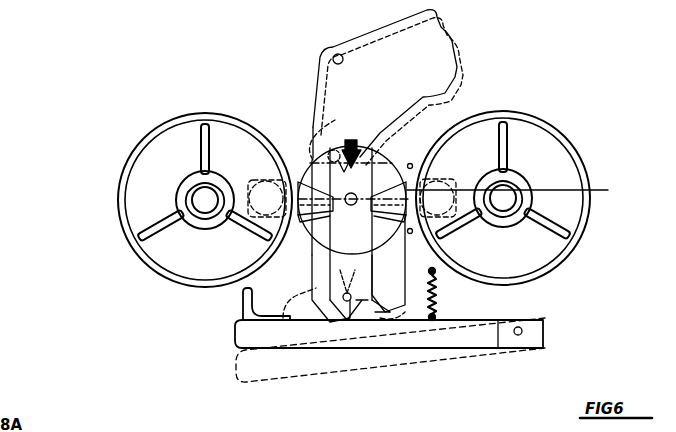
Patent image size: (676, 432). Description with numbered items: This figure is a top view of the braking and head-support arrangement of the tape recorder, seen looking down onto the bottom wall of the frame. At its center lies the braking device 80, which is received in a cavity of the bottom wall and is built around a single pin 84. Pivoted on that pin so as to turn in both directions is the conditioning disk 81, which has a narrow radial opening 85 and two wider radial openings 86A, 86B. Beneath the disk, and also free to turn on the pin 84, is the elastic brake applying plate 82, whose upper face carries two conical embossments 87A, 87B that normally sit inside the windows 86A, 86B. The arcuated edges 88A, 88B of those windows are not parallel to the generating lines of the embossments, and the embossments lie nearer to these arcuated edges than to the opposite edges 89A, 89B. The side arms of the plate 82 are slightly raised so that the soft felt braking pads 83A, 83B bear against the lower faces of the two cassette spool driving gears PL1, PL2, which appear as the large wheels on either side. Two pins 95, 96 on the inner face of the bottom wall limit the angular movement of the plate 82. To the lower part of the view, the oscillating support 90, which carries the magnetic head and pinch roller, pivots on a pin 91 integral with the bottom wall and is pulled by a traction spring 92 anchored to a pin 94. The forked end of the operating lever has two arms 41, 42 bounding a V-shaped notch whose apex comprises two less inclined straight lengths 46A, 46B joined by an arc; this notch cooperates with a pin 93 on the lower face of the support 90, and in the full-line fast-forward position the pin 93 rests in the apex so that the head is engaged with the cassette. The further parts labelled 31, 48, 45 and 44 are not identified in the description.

The cassette spool driving gear PL1 is at (112, 199).
The cassette spool driving gear PL2 is at (526, 251).
The braking pad 83A is at (263, 180).
The braking pad 83B is at (455, 205).
The brake applying plate 82 is at (463, 190).
The opposite edge of window 89A is at (312, 160).
The pivot hole 31 is at (339, 54).
The pin 84 is at (352, 206).
The braking device 80 is at (303, 157).
The conical embossment 87A is at (296, 183).
The radial opening 86B is at (390, 165).
The opposite edge of window 89B is at (380, 160).
The straight length 46B is at (359, 148).
The narrow radial opening 85 is at (347, 150).
The straight length 46A is at (333, 150).
The pin 48 is at (344, 150).
The pin 95 is at (410, 163).
The pin 96 is at (410, 234).
The arcuated edge of window 88A is at (300, 237).
The radial opening 86A is at (325, 240).
The conical embossment 87B is at (397, 263).
The arcuated edge of window 88B is at (401, 304).
The pin 93 is at (347, 296).
The pin 94 is at (436, 270).
The traction spring 92 is at (437, 300).
The oscillating support 90 is at (292, 360).
The arm 42 is at (290, 312).
The pin 91 is at (518, 336).
The bracket 45 is at (315, 332).
The conditioning disk 81 is at (362, 300).
The guide 44 is at (382, 312).
The arm 41 is at (381, 314).